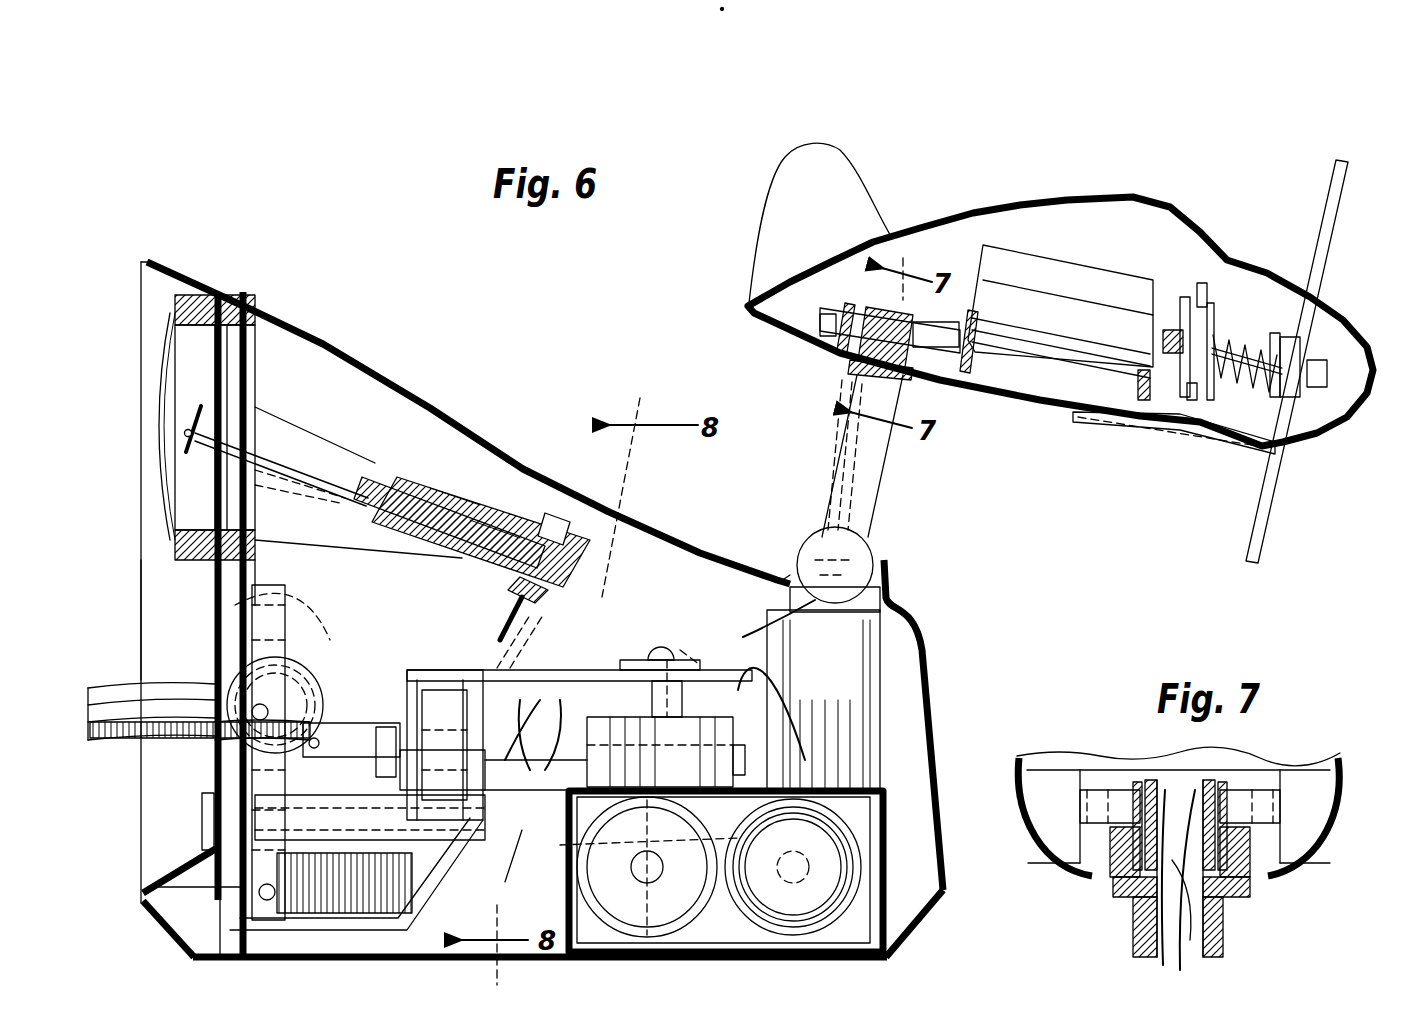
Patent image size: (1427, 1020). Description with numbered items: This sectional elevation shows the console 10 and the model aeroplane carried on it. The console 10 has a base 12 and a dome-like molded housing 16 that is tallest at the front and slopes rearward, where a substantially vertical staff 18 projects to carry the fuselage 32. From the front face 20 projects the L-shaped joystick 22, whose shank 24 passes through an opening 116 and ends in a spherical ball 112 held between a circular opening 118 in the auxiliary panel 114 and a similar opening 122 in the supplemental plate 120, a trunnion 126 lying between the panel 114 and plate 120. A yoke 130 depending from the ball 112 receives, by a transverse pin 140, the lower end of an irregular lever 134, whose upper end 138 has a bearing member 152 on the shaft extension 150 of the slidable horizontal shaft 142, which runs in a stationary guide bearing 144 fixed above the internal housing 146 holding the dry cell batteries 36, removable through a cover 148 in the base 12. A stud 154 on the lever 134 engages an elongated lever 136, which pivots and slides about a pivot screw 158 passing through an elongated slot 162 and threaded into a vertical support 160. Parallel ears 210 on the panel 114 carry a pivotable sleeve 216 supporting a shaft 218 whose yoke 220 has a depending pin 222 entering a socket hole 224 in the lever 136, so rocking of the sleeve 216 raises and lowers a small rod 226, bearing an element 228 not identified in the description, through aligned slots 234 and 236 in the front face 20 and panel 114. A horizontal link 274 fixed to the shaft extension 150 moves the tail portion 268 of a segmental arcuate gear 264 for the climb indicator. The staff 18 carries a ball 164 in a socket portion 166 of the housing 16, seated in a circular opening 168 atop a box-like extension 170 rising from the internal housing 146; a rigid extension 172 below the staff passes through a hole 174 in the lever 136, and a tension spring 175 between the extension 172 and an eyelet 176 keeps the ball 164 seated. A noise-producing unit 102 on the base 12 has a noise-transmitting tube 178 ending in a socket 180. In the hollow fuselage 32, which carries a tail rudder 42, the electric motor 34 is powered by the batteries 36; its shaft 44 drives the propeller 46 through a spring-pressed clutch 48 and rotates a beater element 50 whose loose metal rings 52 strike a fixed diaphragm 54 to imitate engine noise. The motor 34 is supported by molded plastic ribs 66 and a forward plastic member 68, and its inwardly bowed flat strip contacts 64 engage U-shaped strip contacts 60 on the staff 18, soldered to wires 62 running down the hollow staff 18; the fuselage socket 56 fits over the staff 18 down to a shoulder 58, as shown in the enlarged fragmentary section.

In FIG. 6, the console 10 is at (403, 378).
In FIG. 6, the base 12 is at (183, 930).
In FIG. 6, the housing 16 is at (278, 318).
In FIG. 6, the staff 18 is at (866, 472).
In FIG. 7, the staff 18 is at (1225, 927).
In FIG. 6, the front face 20 is at (215, 605).
In FIG. 6, the joystick 22 is at (118, 762).
In FIG. 6, the shank 24 is at (135, 684).
In FIG. 6, the fuselage 32 is at (1098, 196).
In FIG. 7, the fuselage 32 is at (1345, 780).
In FIG. 6, the electric motor 34 is at (1090, 264).
In FIG. 6, the dry cell batteries 36 is at (590, 847).
In FIG. 6, the tail rudder 42 is at (770, 197).
In FIG. 6, the motor shaft 44 is at (1258, 332).
In FIG. 6, the propeller 46 is at (1340, 230).
In FIG. 6, the spring-pressed clutch 48 is at (1288, 332).
In FIG. 6, the beater element 50 is at (1185, 292).
In FIG. 6, the metal rings 52 is at (1205, 283).
In FIG. 6, the diaphragm 54 is at (852, 366).
In FIG. 7, the socket 56 is at (1250, 857).
In FIG. 7, the shoulder 58 is at (1120, 899).
In FIG. 7, the strip contacts 60 is at (1160, 795).
In FIG. 6, the electric conduit wires 62 is at (758, 630).
In FIG. 7, the electric conduit wires 62 is at (1160, 966).
In FIG. 6, the flat strip contacts 64 is at (950, 347).
In FIG. 7, the flat strip contacts 64 is at (1135, 800).
In FIG. 6, the molded plastic ribs 66 is at (850, 312).
In FIG. 7, the molded plastic ribs 66 is at (1055, 817).
In FIG. 6, the forward plastic member 68 is at (1140, 397).
In FIG. 6, the noise-producing unit 102 is at (440, 906).
In FIG. 6, the spherical ball 112 is at (292, 682).
In FIG. 6, the auxiliary panel 114 is at (253, 580).
In FIG. 6, the opening 116 is at (215, 745).
In FIG. 6, the circular opening 118 is at (218, 657).
In FIG. 6, the supplemental plate 120 is at (300, 632).
In FIG. 6, the circular opening 122 is at (306, 652).
In FIG. 6, the trunnion 126 is at (240, 692).
In FIG. 6, the yoke 130 is at (285, 880).
In FIG. 6, the irregular lever 134 is at (462, 870).
In FIG. 6, the elongated lever 136 is at (710, 670).
In FIG. 6, the upper end 138 is at (417, 672).
In FIG. 6, the transverse pin 140 is at (285, 900).
In FIG. 6, the pivot shaft member 142 is at (620, 668).
In FIG. 6, the guide bearing 144 is at (700, 714).
In FIG. 6, the internal housing 146 is at (578, 905).
In FIG. 6, the cover 148 is at (705, 960).
In FIG. 6, the shaft extension 150 is at (444, 745).
In FIG. 6, the bearing member 152 is at (440, 772).
In FIG. 6, the stud 154 is at (440, 668).
In FIG. 6, the pivot screw 158 is at (670, 642).
In FIG. 6, the vertical support 160 is at (590, 745).
In FIG. 6, the elongated slot 162 is at (720, 668).
In FIG. 6, the ball 164 is at (868, 562).
In FIG. 6, the socket portion 166 is at (892, 586).
In FIG. 6, the circular opening 168 is at (880, 630).
In FIG. 6, the box-like extension 170 is at (880, 680).
In FIG. 6, the rigid extension 172 is at (880, 656).
In FIG. 6, the hole 174 is at (880, 710).
In FIG. 6, the tension spring 175 is at (880, 732).
In FIG. 6, the eyelet 176 is at (880, 755).
In FIG. 6, the noise-transmitting tube 178 is at (300, 802).
In FIG. 6, the socket 180 is at (202, 822).
In FIG. 6, the ears 210 is at (348, 460).
In FIG. 6, the sleeve 216 is at (458, 486).
In FIG. 6, the shaft 218 is at (392, 484).
In FIG. 6, the yoke 220 is at (558, 512).
In FIG. 6, the depending pin 222 is at (520, 605).
In FIG. 6, the socket hole 224 is at (530, 622).
In FIG. 6, the small rod 226 is at (298, 462).
In FIG. 6, the pointer 228 is at (195, 415).
In FIG. 6, the slot 234 is at (205, 468).
In FIG. 6, the slot 236 is at (255, 386).
In FIG. 6, the segmental arcuate gear 264 is at (300, 614).
In FIG. 6, the tail portion 268 is at (326, 714).
In FIG. 6, the horizontal link 274 is at (402, 724).